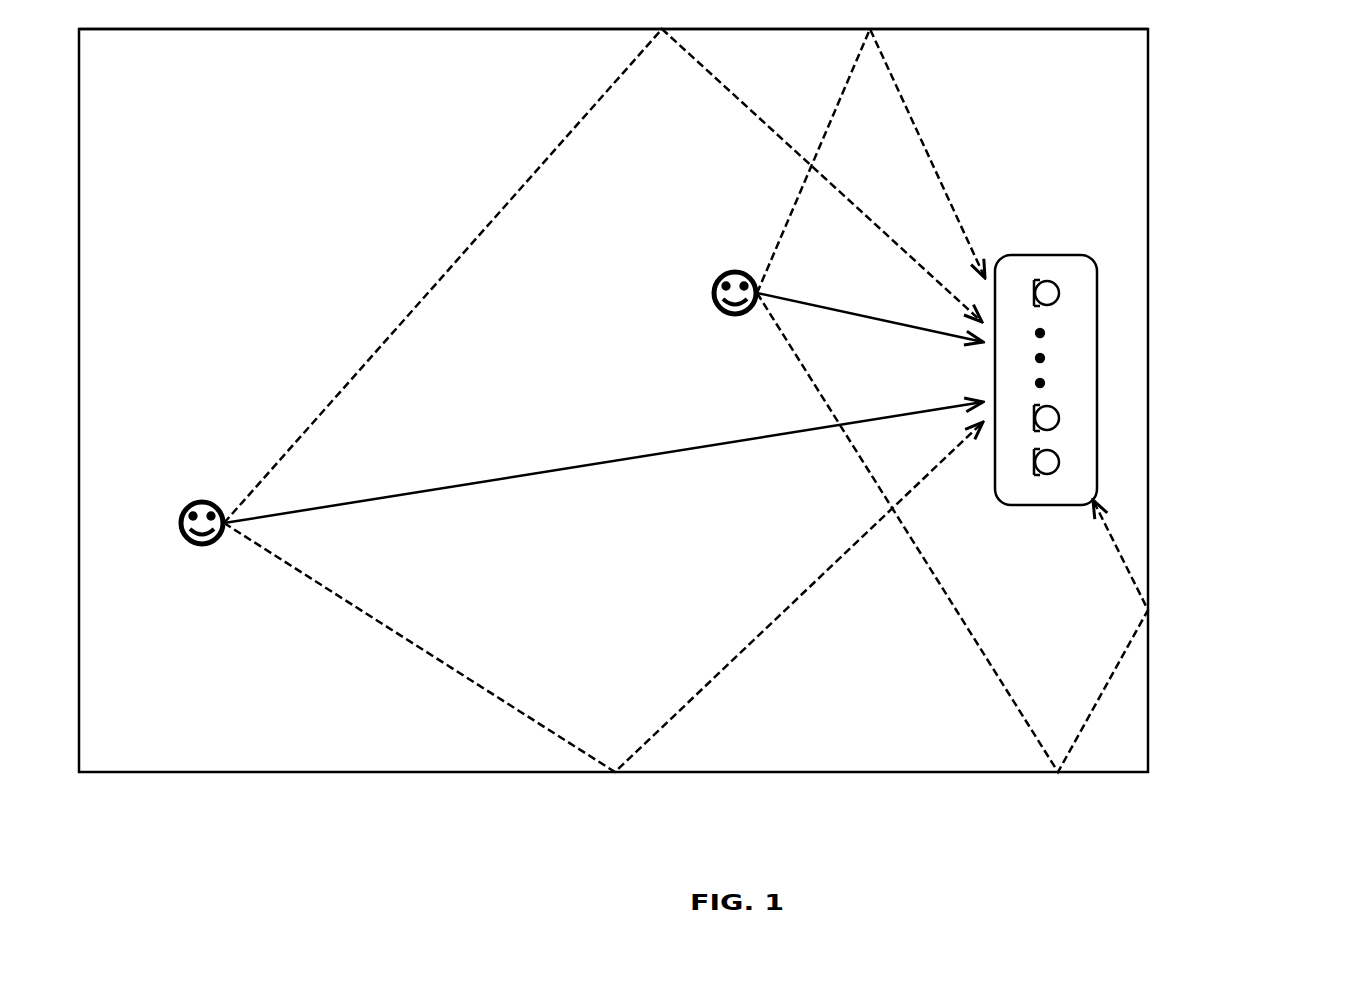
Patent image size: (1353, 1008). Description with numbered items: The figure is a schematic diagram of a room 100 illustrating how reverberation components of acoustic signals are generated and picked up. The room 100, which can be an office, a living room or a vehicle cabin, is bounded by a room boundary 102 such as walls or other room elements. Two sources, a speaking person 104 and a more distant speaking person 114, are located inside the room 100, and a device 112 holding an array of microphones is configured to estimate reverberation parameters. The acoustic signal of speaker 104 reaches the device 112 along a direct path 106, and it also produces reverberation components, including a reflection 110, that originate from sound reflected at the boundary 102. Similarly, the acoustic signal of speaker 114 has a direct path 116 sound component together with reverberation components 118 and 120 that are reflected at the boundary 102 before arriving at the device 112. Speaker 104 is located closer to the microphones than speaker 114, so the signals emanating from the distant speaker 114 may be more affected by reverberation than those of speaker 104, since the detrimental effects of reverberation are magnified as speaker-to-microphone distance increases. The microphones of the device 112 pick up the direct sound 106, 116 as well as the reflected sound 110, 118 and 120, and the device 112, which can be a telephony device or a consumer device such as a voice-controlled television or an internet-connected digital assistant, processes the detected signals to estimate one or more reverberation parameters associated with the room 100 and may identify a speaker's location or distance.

The room 100 is at (147, 132).
The room boundary 102 is at (343, 29).
The speaker 104 is at (734, 318).
The direct path 106 is at (870, 322).
The reflection 110 is at (1127, 572).
The device with estimation of reverberation parameters 112 is at (1097, 270).
The speaker 114 is at (202, 548).
The direct path 116 is at (494, 482).
The reflection 118 is at (790, 148).
The reflection 120 is at (705, 683).